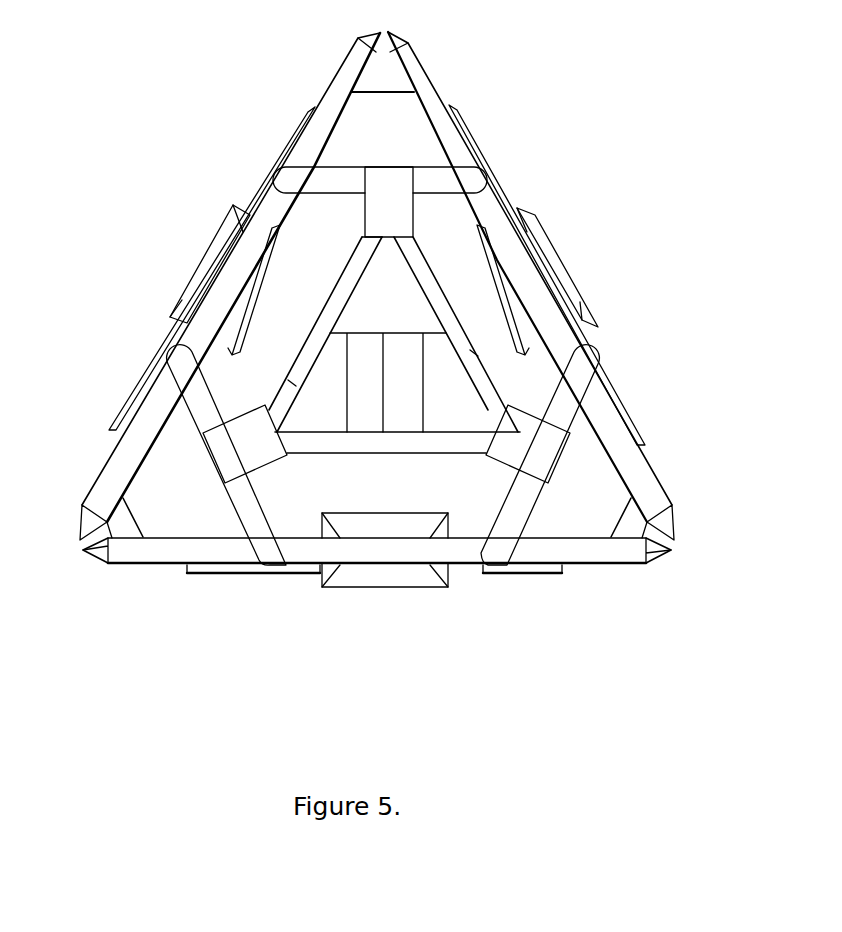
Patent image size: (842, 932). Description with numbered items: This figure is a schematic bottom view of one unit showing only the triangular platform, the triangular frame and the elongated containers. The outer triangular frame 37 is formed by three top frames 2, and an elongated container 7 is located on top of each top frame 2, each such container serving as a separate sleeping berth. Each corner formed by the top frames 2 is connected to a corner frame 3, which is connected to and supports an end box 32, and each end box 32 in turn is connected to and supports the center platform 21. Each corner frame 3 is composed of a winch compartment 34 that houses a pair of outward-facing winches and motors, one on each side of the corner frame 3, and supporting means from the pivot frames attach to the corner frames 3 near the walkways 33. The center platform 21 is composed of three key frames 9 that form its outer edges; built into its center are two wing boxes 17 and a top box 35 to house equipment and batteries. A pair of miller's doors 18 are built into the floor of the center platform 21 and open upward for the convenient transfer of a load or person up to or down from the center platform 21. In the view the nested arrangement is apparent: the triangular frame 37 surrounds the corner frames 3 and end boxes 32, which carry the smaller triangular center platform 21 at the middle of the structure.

The top frame 2 is at (338, 70).
The corner frame 3 is at (248, 83).
The elongated container 7 is at (282, 152).
The key frame 9 is at (318, 330).
The wing box 17 is at (290, 378).
The miller's door 18 is at (395, 440).
The center platform 21 is at (476, 302).
The end box 32 is at (414, 228).
The walkway 33 is at (345, 196).
The winch compartment 34 is at (323, 137).
The top box 35 is at (365, 272).
The triangular frame 37 is at (410, 641).